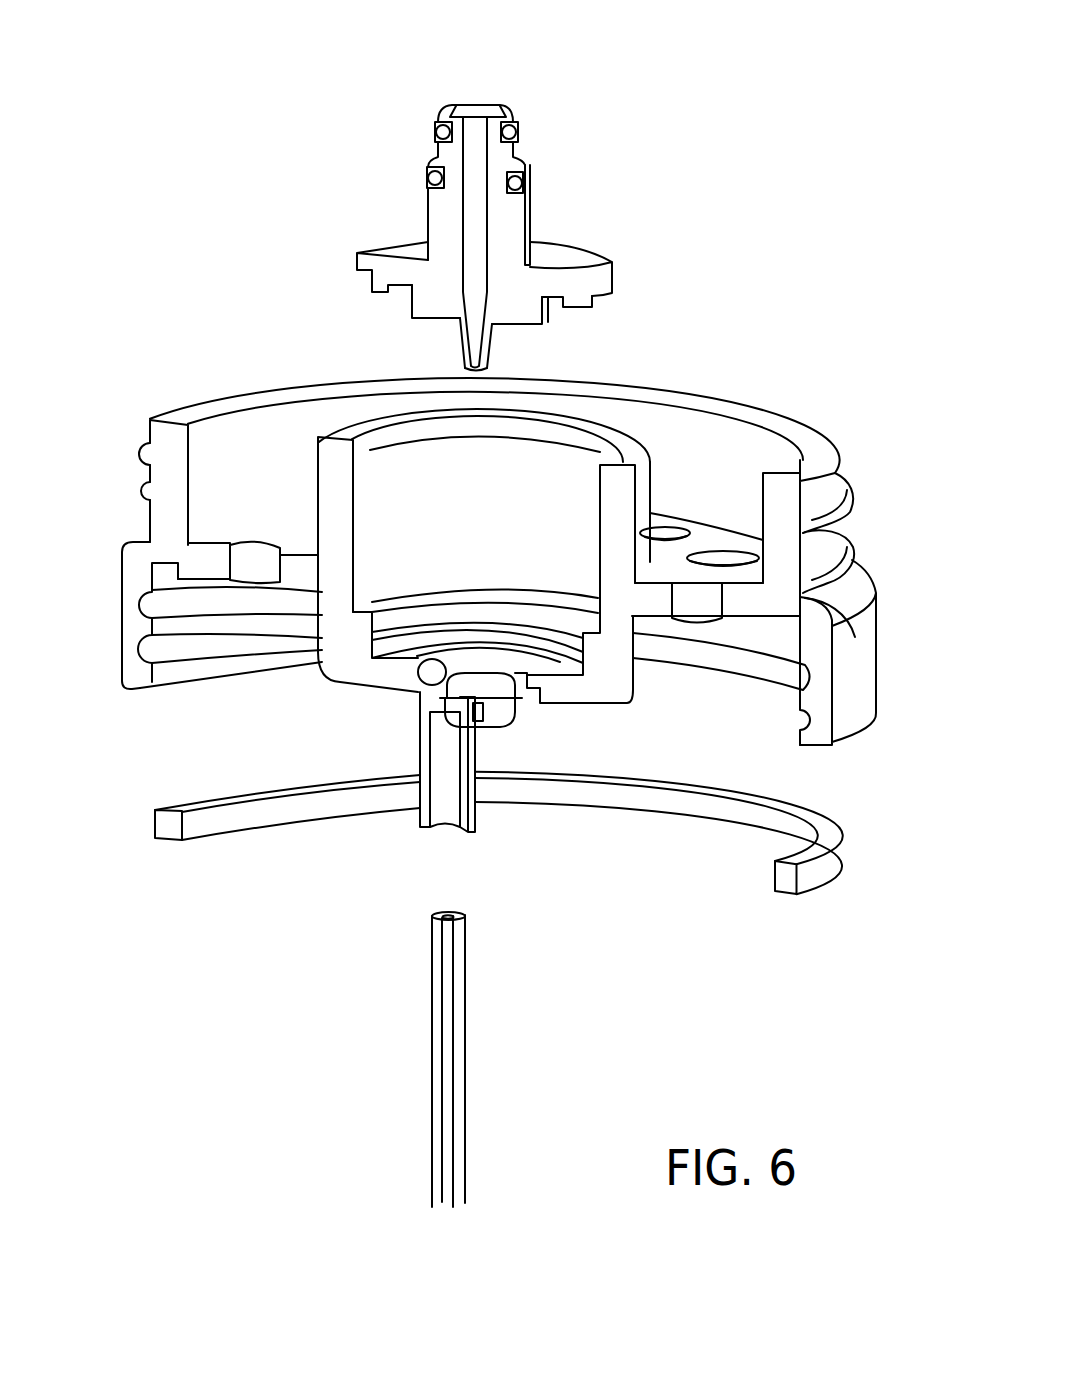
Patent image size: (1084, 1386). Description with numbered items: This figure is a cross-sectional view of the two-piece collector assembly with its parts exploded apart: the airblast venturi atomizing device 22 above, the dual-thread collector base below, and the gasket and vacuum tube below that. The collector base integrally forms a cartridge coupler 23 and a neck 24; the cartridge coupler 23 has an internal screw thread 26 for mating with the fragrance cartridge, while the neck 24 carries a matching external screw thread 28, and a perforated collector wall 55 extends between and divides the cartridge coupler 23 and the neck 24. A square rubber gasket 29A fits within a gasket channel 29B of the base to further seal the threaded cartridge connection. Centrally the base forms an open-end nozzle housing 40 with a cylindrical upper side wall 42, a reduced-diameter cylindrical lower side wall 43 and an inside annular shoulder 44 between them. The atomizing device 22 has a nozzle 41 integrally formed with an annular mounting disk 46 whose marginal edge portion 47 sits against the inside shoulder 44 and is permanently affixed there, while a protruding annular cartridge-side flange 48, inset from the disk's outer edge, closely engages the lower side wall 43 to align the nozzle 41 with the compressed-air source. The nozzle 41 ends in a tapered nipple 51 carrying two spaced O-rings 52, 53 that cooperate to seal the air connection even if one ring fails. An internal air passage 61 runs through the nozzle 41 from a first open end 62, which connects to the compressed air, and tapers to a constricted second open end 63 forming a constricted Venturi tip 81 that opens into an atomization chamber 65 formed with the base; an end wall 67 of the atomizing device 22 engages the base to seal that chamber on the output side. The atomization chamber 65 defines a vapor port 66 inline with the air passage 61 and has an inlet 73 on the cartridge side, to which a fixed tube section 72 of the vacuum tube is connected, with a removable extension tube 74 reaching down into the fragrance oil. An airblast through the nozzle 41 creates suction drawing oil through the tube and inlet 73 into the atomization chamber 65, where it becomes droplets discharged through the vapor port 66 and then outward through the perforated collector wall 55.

The airblast venturi atomizing device 22 is at (393, 222).
The cartridge coupler 23 is at (867, 642).
The neck 24 is at (828, 478).
The internal screw thread 26 is at (807, 718).
The external screw thread 28 is at (853, 493).
The square rubber gasket 29A is at (182, 808).
The gasket channel 29B is at (163, 568).
The nozzle housing 40 is at (345, 426).
The nozzle 41 is at (532, 210).
The cylindrical upper side wall 42 is at (455, 490).
The reduced-diameter cylindrical lower side wall 43 is at (413, 617).
The inside annular shoulder 44 is at (540, 590).
The annular mounting disk 46 is at (593, 258).
The marginal edge portion 47 is at (385, 287).
The protruding annular cartridge-side flange 48 is at (592, 312).
The tapered nipple 51 is at (438, 118).
The O-ring 52 is at (520, 128).
The O-ring 53 is at (525, 183).
The perforated collector wall 55 is at (703, 540).
The internal air passage 61 is at (482, 223).
The first open end 62 is at (477, 113).
The constricted second open end 63 is at (488, 368).
The atomization chamber 65 is at (505, 712).
The vapor port 66 is at (477, 730).
The end wall 67 is at (420, 321).
The fixed tube section 72 is at (417, 815).
The inlet 73 is at (415, 693).
The removable extension tube 74 is at (433, 988).
The constricted Venturi tip 81 is at (460, 348).